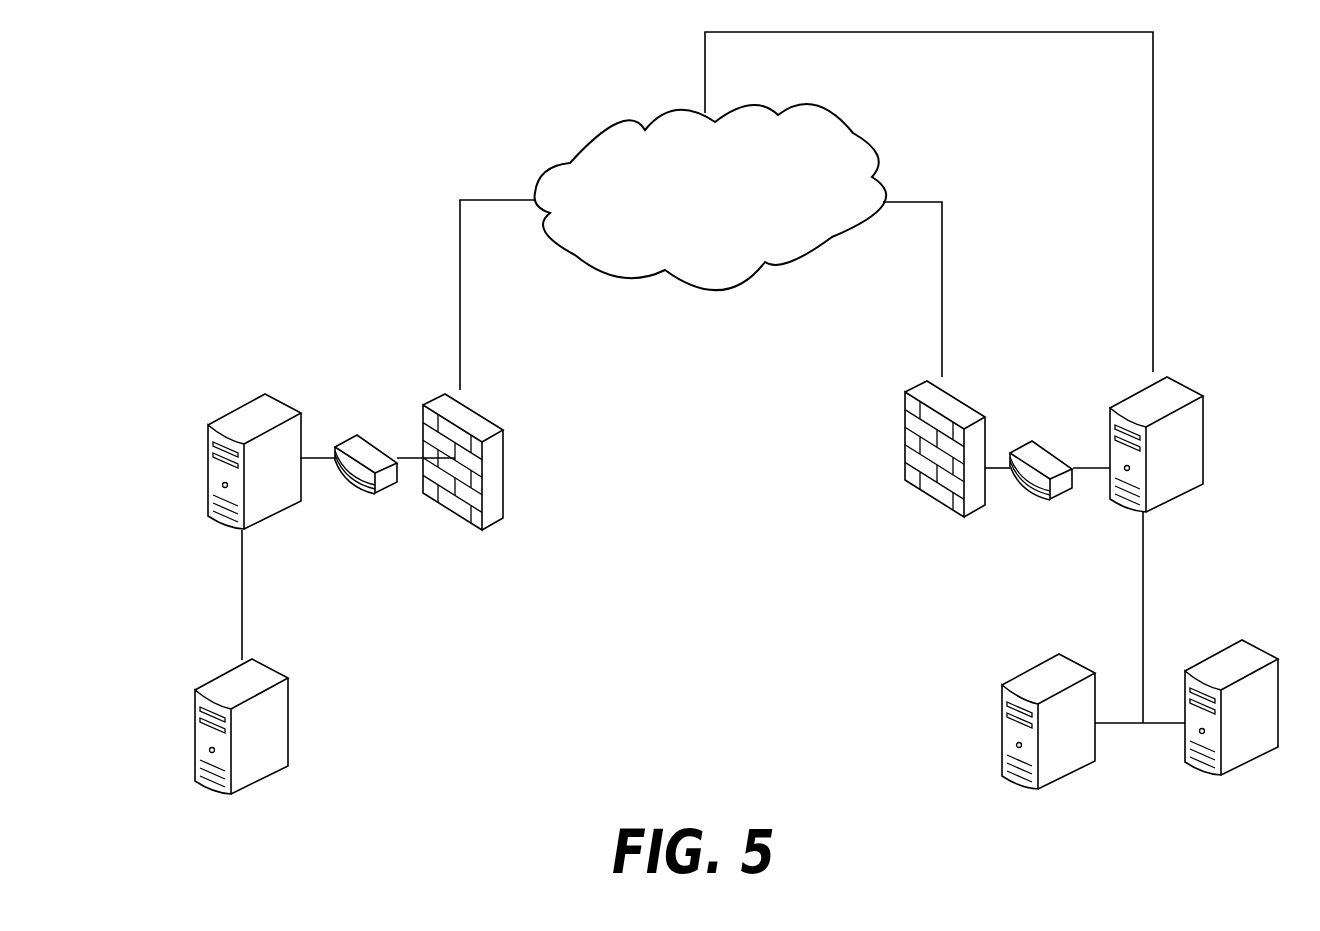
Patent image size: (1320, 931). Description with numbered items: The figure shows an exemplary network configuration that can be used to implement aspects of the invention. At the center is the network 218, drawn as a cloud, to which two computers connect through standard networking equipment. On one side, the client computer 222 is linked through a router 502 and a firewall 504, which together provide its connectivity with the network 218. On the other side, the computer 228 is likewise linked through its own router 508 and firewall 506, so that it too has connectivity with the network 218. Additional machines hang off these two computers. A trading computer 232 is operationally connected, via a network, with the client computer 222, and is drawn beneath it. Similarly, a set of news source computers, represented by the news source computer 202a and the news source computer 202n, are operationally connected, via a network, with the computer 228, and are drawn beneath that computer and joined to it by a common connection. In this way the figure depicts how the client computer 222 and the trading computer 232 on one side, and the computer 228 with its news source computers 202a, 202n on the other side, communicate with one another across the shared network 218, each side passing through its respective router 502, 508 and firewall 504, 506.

The network 218 is at (884, 115).
The client computer 222 is at (257, 395).
The trading computer 232 is at (280, 675).
The computer 228 is at (1192, 390).
The news source computer 202a is at (1045, 658).
The news source computer 202n is at (1237, 642).
The router 502 is at (357, 435).
The router 508 is at (1043, 440).
The firewall 504 is at (492, 420).
The firewall 506 is at (970, 405).